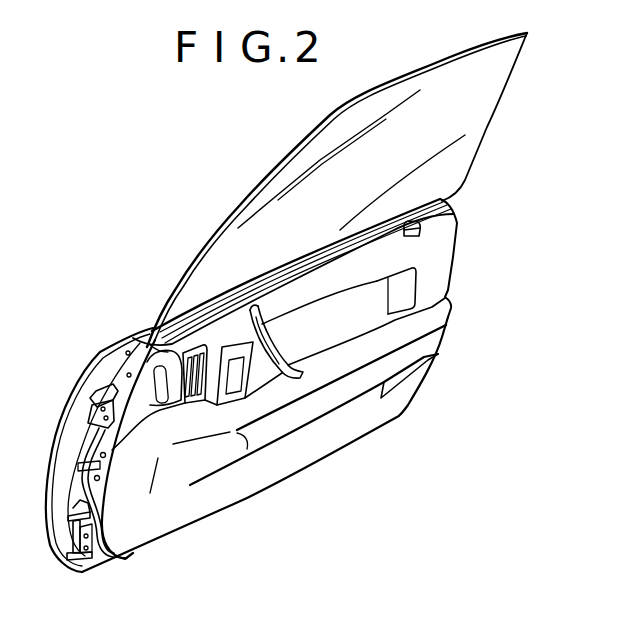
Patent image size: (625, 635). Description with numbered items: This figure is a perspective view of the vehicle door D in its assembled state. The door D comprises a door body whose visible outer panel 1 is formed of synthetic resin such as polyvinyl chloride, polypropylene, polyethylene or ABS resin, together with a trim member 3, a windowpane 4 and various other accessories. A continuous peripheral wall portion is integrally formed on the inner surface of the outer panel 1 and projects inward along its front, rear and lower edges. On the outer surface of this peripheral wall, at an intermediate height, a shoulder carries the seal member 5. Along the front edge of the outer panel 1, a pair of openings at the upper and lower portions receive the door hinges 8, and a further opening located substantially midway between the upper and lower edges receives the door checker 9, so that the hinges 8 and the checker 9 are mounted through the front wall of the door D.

The outer panel 1 is at (117, 342).
The trim member 3 is at (272, 473).
The windowpane 4 is at (391, 83).
The seal member 5 is at (94, 555).
The door hinges 8 is at (100, 393).
The door checker 9 is at (93, 456).
The vehicle door D is at (215, 198).